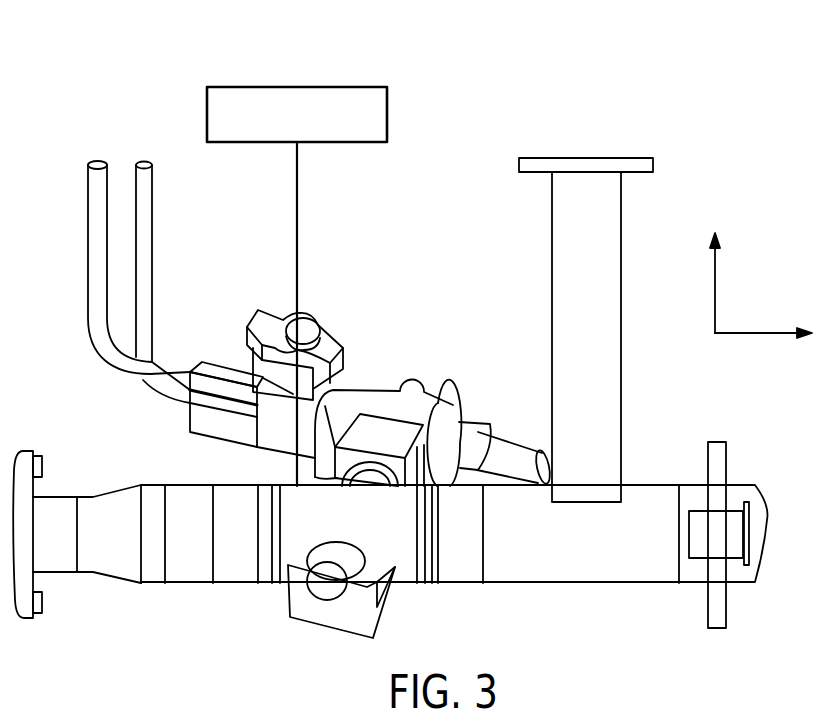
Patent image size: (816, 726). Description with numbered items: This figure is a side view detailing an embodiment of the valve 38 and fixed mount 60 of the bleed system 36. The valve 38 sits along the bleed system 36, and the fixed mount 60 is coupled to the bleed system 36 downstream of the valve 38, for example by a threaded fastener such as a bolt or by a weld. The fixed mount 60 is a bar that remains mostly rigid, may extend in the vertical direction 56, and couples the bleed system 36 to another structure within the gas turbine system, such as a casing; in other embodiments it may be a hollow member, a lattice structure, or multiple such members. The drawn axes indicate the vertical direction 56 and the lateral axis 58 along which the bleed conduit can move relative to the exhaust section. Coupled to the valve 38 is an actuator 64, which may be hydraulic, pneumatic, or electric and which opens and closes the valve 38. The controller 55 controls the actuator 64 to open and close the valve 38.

The bleed system 36 is at (131, 62).
The valve 38 is at (358, 521).
The controller 55 is at (390, 105).
The vertical direction 56 is at (716, 287).
The lateral axis 58 is at (758, 335).
The fixed mount 60 is at (580, 298).
The actuator 64 is at (340, 370).